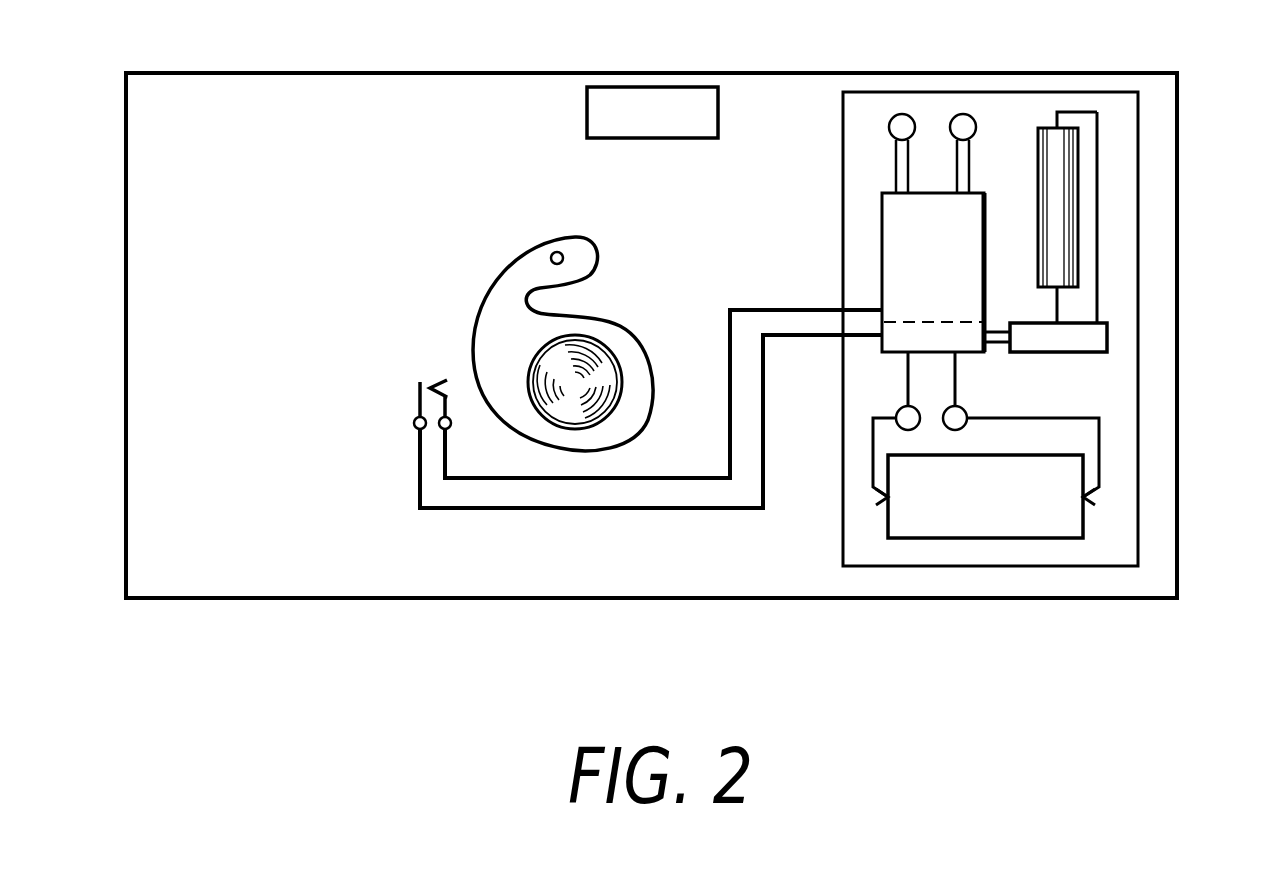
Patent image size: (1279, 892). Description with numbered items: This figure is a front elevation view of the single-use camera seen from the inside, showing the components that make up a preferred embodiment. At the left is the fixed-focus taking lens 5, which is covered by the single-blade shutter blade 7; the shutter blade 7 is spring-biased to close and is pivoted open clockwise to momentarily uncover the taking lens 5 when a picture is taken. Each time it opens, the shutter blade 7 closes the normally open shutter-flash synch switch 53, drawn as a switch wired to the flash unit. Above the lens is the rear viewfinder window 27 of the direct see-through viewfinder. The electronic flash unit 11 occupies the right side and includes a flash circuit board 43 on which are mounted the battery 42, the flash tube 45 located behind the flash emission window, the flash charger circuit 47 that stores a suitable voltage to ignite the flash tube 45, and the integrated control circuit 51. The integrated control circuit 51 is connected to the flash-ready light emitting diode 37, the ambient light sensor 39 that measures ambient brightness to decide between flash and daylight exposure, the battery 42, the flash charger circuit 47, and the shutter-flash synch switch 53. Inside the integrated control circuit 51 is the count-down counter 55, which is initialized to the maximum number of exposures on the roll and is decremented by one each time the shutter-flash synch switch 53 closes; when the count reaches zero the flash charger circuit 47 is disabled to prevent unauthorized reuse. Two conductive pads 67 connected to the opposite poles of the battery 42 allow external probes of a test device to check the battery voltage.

The taking lens 5 is at (600, 340).
The shutter blade 7 is at (655, 398).
The electronic flash unit 11 is at (1160, 248).
The rear viewfinder window 27 is at (648, 117).
The flash-ready light emitting diode 37 is at (896, 116).
The ambient light sensor 39 is at (966, 116).
The battery 42 is at (1083, 520).
The flash circuit board 43 is at (1138, 447).
The flash tube 45 is at (1078, 195).
The flash charger circuit 47 is at (1107, 332).
The integrated control circuit 51 is at (882, 258).
The shutter-flash synch switch 53 is at (405, 392).
The count-down counter 55 is at (895, 337).
The conductive pads 67 is at (968, 415).